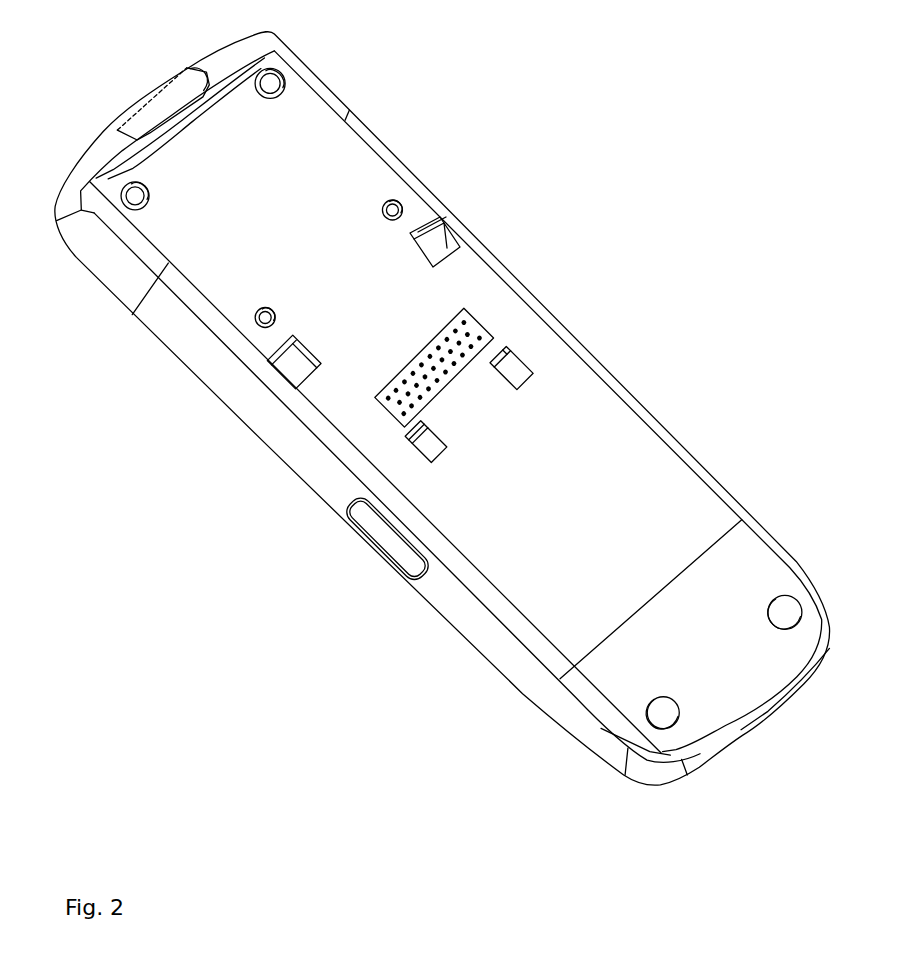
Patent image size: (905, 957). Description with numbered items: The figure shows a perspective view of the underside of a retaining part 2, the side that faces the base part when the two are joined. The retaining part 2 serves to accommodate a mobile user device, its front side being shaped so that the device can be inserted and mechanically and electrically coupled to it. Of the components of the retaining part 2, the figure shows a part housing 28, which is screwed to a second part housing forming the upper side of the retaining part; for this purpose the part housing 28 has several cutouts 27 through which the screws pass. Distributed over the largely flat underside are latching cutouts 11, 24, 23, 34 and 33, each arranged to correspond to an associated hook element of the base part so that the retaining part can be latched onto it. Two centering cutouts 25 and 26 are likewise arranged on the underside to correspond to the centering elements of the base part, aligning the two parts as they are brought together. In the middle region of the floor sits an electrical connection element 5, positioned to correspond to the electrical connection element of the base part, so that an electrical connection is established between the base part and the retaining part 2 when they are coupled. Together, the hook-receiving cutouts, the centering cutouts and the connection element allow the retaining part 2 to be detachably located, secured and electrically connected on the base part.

The retaining part 2 is at (399, 145).
The electrical connection element 5 is at (493, 330).
The latching cutout 11 is at (163, 97).
The latching cutout 23 is at (523, 357).
The latching cutout 24 is at (413, 443).
The centering cutout 25 is at (403, 203).
The centering cutout 26 is at (247, 320).
The cutout 27 is at (280, 84).
The part housing 28 is at (533, 690).
The latching cutout 33 is at (453, 237).
The latching cutout 34 is at (280, 370).